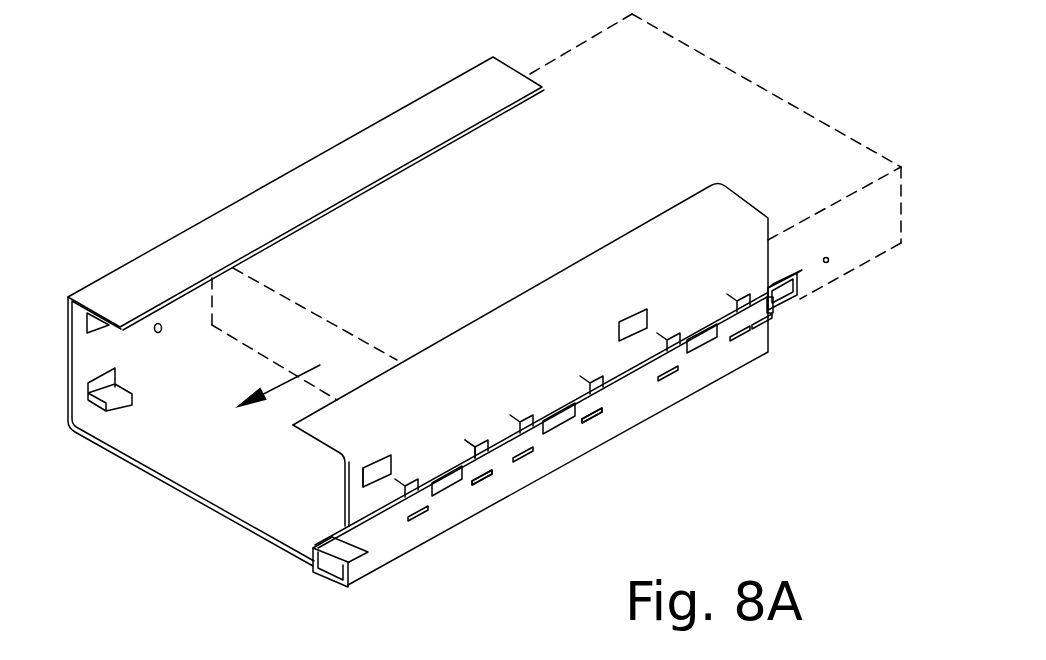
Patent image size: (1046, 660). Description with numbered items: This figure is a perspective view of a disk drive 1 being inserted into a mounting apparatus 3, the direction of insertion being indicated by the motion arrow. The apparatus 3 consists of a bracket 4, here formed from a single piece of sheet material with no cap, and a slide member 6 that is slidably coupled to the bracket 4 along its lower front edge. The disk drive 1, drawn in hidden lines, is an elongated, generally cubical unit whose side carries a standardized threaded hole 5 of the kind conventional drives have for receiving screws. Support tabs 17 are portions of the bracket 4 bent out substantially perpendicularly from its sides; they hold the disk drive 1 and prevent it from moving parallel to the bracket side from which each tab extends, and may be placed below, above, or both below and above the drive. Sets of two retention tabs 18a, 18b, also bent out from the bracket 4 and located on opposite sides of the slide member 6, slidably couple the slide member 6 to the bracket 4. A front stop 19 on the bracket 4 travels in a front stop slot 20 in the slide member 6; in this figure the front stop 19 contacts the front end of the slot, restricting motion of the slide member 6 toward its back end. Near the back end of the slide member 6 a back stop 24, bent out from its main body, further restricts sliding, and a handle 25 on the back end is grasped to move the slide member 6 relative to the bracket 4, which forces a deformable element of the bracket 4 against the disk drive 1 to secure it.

The disk drive 1 is at (545, 200).
The apparatus 3 is at (300, 120).
The bracket 4 is at (520, 387).
The hole 5 is at (828, 262).
The slide member 6 is at (578, 413).
The support tab 17 is at (628, 313).
The retention tab 18a is at (488, 481).
The retention tab 18b is at (485, 455).
The front stop 19 is at (775, 308).
The front stop slot 20 is at (783, 300).
The back stop 24 is at (337, 527).
The handle 25 is at (323, 570).